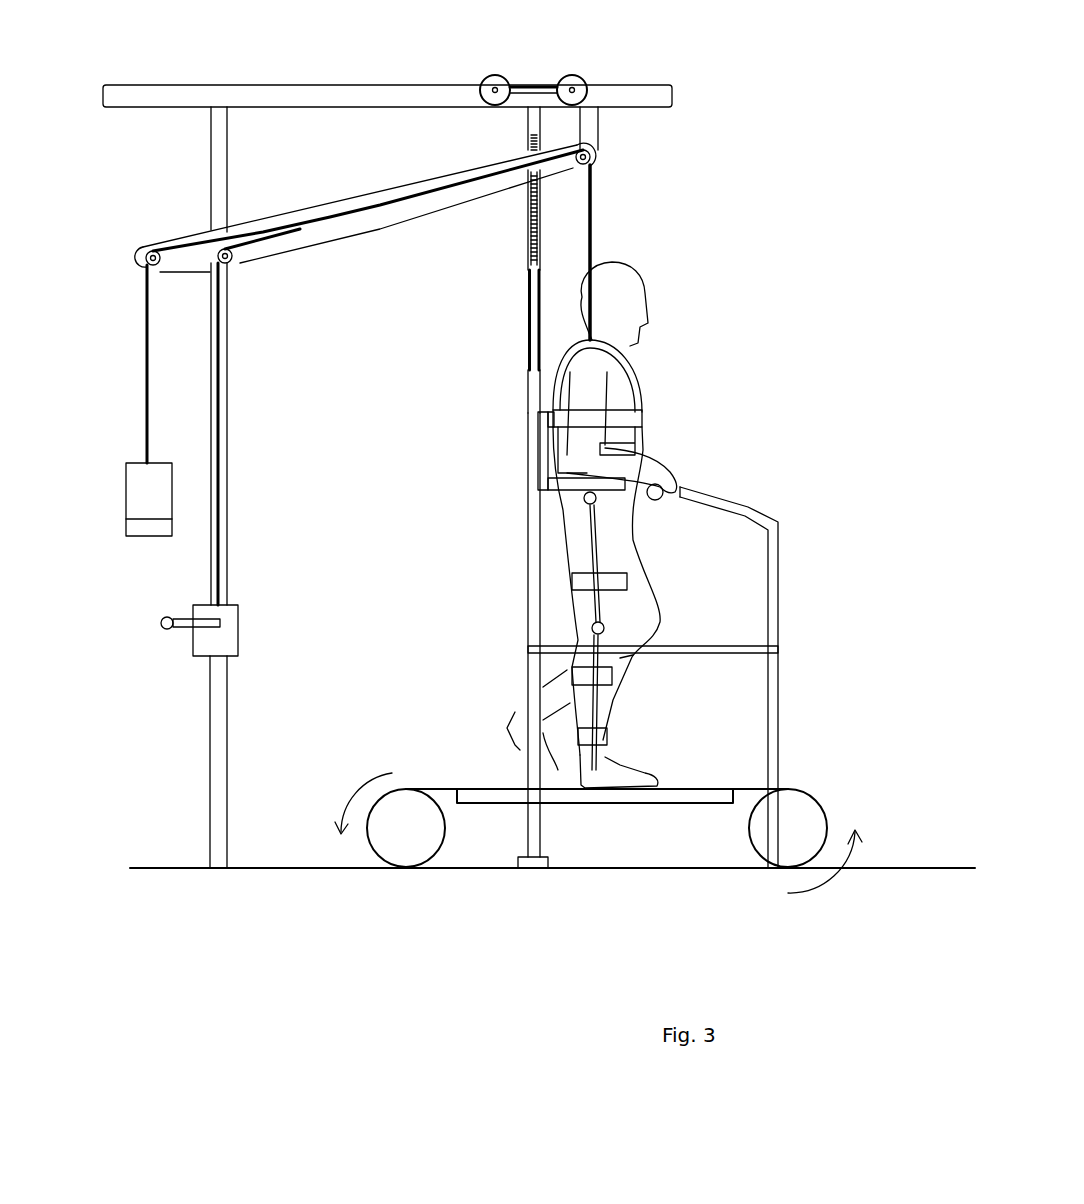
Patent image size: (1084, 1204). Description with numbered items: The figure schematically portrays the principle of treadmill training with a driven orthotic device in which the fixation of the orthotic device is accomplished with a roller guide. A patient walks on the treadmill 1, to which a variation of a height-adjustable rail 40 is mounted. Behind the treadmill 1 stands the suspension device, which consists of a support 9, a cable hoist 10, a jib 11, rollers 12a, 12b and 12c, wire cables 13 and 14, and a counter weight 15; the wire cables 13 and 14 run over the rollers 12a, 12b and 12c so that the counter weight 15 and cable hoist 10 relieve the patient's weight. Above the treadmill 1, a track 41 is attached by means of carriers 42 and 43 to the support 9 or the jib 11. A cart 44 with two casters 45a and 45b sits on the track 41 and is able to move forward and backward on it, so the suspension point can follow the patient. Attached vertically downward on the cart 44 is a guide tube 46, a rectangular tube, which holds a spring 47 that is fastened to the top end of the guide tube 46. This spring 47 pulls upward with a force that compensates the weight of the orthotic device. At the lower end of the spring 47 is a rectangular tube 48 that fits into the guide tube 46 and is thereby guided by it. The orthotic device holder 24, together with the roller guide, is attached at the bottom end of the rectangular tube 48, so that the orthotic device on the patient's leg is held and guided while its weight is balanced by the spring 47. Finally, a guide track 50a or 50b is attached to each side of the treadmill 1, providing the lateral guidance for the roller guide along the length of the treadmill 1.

The treadmill 1 is at (613, 848).
The support 9 is at (215, 738).
The cable hoist 10 is at (232, 645).
The jib 11 is at (384, 217).
The roller 12a is at (232, 262).
The roller 12b is at (592, 157).
The roller 12c is at (153, 250).
The wire cable 13 is at (400, 192).
The wire cable 14 is at (151, 365).
The counter weight 15 is at (142, 522).
The orthotic device holder 24 is at (530, 470).
The rail 40 is at (773, 512).
The track 41 is at (317, 95).
The carrier 42 is at (232, 160).
The carrier 43 is at (600, 127).
The cart 44 is at (531, 83).
The caster 45a is at (492, 79).
The caster 45b is at (583, 80).
The guide tube 46 is at (526, 128).
The spring 47 is at (527, 237).
The rectangular tube 48 is at (528, 383).
The guide track 50a is at (485, 640).
The guide track 50b is at (527, 530).